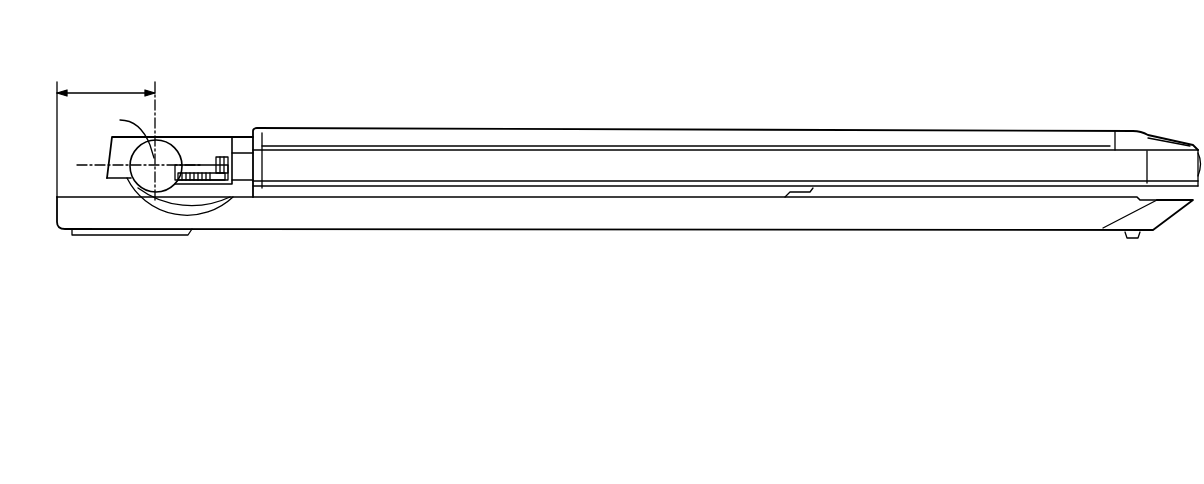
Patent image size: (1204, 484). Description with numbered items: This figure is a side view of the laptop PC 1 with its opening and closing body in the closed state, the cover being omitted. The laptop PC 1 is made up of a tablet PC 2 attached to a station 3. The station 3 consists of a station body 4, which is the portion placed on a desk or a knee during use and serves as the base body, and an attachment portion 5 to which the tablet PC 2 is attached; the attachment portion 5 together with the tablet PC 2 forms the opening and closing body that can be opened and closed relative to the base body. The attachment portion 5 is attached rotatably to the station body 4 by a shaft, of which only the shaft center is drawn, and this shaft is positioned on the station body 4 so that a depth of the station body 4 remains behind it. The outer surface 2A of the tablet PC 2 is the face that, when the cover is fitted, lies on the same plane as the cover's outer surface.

The laptop PC 1 is at (618, 99).
The tablet PC 2 is at (770, 147).
The outer surface of the tablet PC 2A is at (877, 130).
The station 3 is at (586, 252).
The station body 4 is at (673, 215).
The attachment portion 5 is at (196, 150).